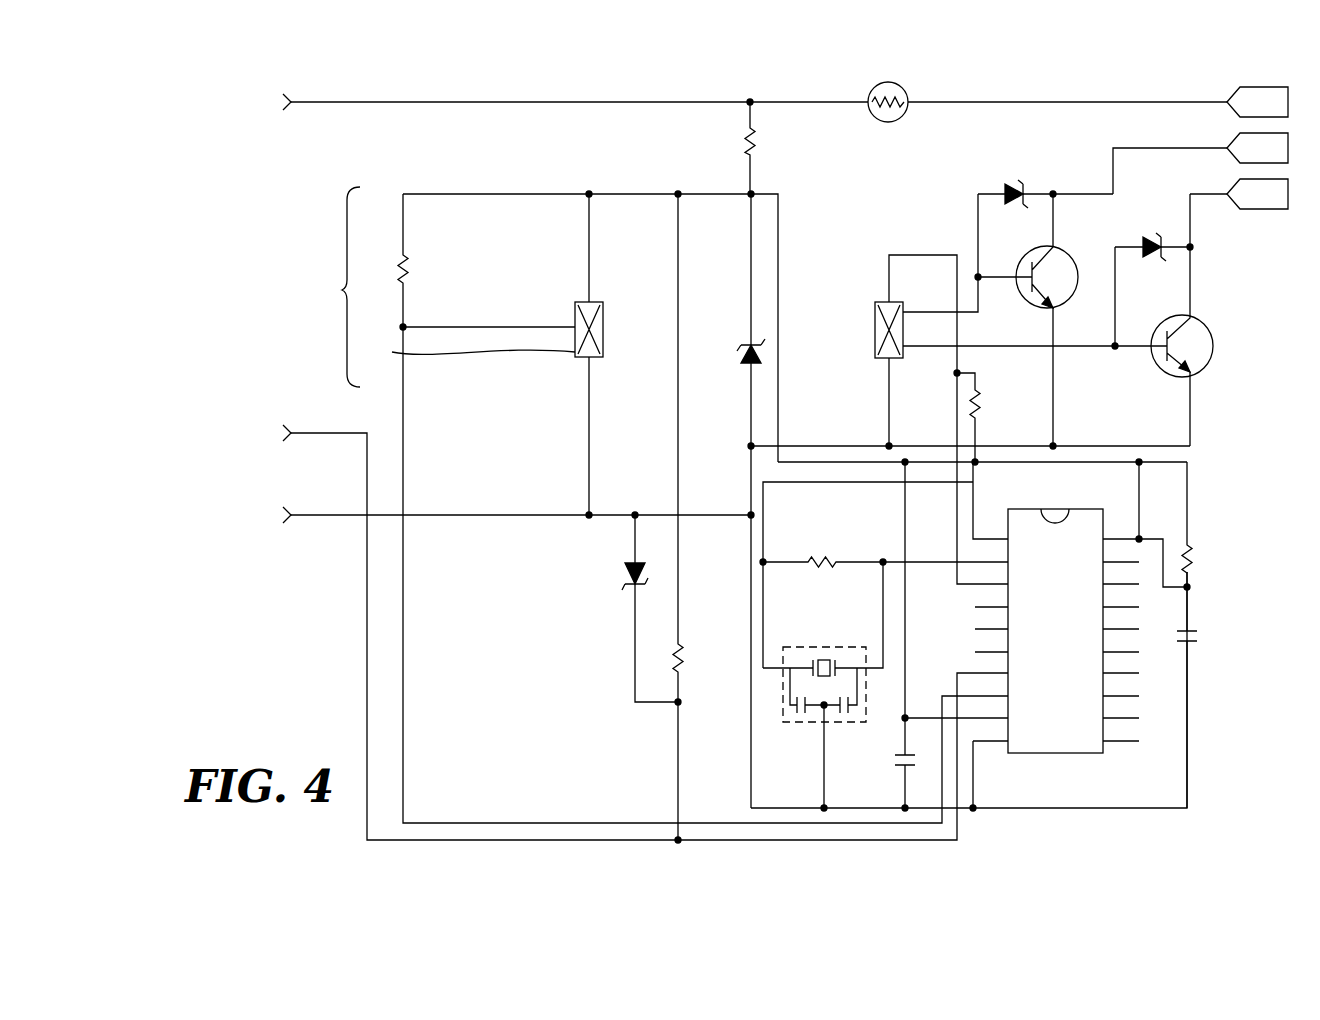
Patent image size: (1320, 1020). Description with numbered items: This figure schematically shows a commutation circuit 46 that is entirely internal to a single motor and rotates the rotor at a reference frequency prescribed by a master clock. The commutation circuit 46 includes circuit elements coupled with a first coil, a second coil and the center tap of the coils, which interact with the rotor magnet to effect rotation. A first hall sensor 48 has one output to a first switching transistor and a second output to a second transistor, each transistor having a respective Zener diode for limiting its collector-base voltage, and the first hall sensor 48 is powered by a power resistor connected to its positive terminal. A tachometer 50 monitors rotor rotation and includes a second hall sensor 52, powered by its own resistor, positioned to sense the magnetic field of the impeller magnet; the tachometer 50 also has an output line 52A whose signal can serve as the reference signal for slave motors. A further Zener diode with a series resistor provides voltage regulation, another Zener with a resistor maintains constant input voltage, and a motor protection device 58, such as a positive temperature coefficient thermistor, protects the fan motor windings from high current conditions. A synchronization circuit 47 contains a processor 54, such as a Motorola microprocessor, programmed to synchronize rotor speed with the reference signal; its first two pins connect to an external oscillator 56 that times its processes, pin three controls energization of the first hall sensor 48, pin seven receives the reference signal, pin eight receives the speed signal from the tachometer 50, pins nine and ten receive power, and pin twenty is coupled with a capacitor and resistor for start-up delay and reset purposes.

The commutation circuit 46 is at (1013, 47).
The synchronization circuit 47 is at (853, 849).
The first hall sensor 48 is at (849, 318).
The tachometer 50 is at (344, 284).
The second hall sensor 52 is at (553, 305).
The tachometer output line 52A is at (384, 358).
The processor 54 is at (1072, 590).
The external oscillator 56 is at (808, 733).
The motor protection device 58 is at (912, 92).